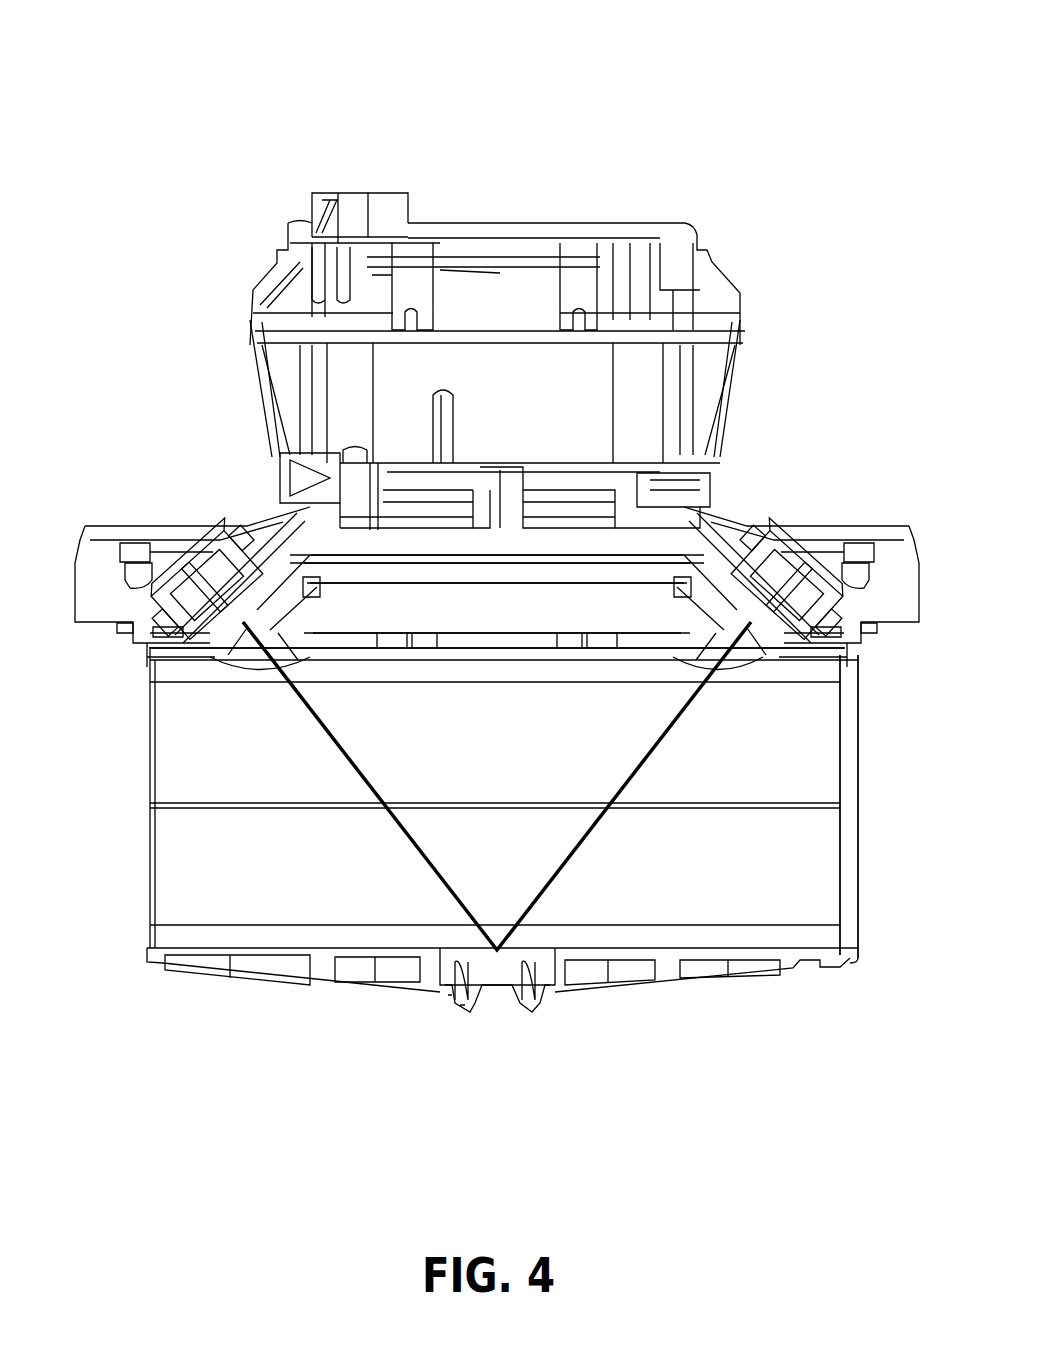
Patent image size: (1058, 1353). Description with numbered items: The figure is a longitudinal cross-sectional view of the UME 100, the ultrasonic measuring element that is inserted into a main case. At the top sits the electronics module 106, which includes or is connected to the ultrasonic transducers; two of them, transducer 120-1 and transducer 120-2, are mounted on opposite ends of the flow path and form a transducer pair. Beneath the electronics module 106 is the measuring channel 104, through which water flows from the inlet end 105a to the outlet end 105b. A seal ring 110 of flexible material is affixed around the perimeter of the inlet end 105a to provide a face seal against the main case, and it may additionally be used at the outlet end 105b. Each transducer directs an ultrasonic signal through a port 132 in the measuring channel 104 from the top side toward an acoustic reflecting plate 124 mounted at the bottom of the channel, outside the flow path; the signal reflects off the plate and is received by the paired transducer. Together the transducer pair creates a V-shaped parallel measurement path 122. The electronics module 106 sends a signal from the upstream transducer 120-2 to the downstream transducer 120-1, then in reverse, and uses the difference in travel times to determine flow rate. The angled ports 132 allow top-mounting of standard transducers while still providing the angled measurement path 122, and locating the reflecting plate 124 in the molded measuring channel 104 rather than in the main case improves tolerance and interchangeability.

The UME 100 is at (149, 58).
The measuring channel 104 is at (88, 577).
The inlet end 105a is at (841, 905).
The outlet end 105b is at (152, 962).
The electronics module 106 is at (681, 226).
The seal ring 110 is at (820, 968).
The ultrasonic transducer 120-1 is at (218, 582).
The ultrasonic transducer 120-2 is at (772, 582).
The V-shaped parallel measurement path 122 is at (545, 880).
The acoustic reflecting plate 124 is at (498, 977).
The port 132 is at (240, 672).